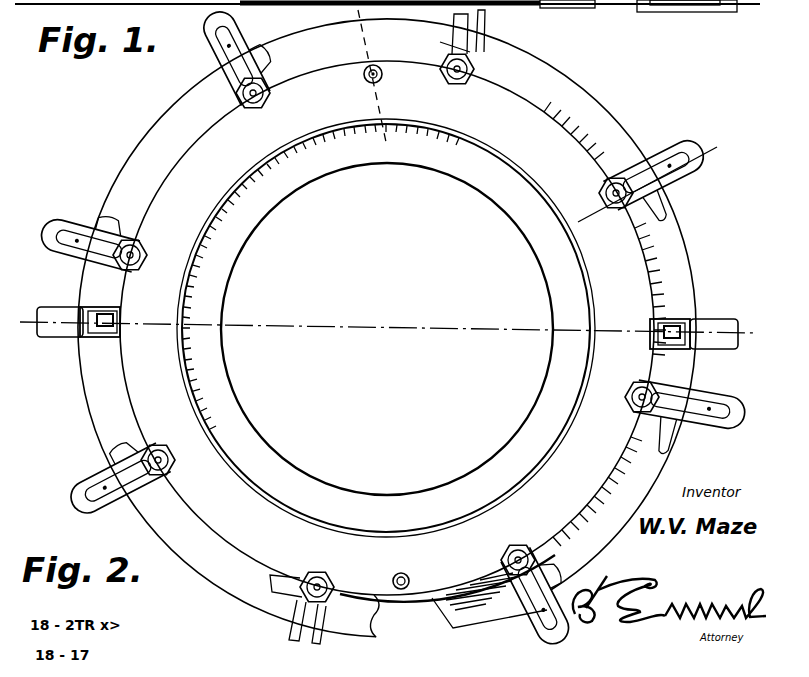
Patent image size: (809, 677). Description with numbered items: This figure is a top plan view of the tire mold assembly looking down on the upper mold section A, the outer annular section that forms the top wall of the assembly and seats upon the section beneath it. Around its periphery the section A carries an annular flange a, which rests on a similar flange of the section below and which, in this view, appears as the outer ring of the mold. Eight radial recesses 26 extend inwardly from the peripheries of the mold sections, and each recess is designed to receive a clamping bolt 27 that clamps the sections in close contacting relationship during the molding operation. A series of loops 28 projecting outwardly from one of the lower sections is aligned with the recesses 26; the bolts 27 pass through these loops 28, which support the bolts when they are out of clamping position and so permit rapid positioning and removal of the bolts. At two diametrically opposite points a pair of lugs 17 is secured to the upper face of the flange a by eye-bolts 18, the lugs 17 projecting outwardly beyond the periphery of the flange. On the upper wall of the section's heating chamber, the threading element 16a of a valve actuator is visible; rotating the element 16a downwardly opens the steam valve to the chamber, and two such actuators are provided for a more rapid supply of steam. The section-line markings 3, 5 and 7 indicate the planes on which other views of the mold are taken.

The annular flange a is at (585, 106).
The upper mold section A is at (386, 323).
The loops 28 is at (214, 49).
The radial recesses 26 is at (240, 86).
The clamping bolts 27 is at (258, 108).
The lugs 17 is at (62, 332).
The eye-bolts 18 is at (96, 340).
The threading element 16a is at (382, 80).
The section line 5- 5 is at (375, 22).
The section line 7- 7 is at (583, 212).
The section line 3- 3 is at (30, 316).